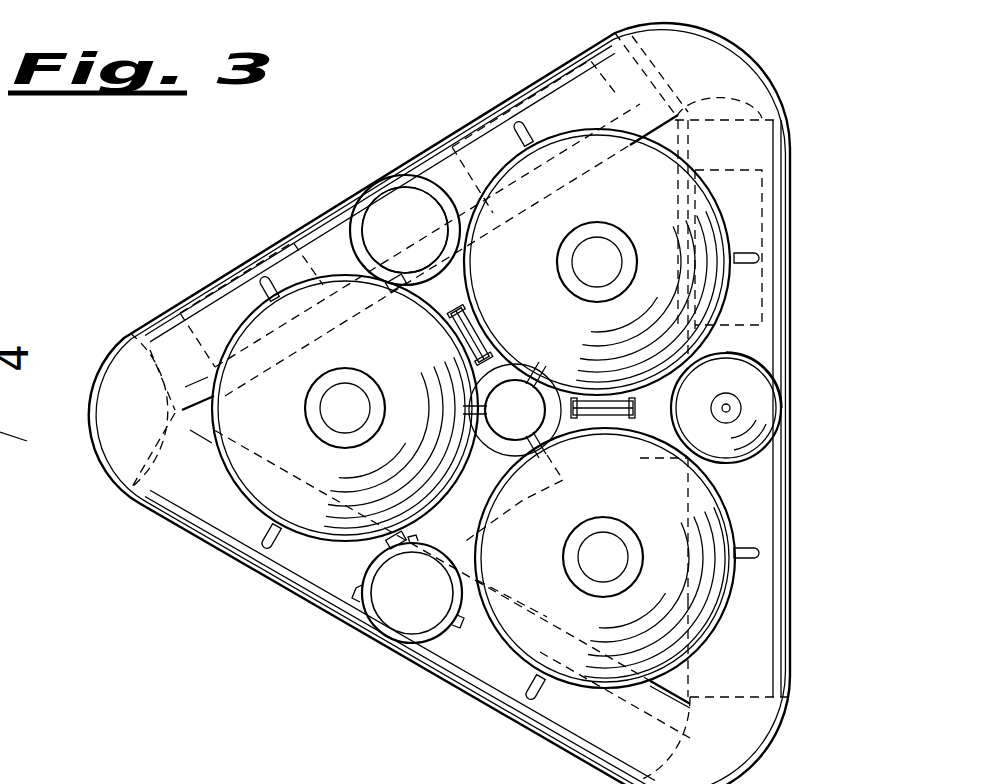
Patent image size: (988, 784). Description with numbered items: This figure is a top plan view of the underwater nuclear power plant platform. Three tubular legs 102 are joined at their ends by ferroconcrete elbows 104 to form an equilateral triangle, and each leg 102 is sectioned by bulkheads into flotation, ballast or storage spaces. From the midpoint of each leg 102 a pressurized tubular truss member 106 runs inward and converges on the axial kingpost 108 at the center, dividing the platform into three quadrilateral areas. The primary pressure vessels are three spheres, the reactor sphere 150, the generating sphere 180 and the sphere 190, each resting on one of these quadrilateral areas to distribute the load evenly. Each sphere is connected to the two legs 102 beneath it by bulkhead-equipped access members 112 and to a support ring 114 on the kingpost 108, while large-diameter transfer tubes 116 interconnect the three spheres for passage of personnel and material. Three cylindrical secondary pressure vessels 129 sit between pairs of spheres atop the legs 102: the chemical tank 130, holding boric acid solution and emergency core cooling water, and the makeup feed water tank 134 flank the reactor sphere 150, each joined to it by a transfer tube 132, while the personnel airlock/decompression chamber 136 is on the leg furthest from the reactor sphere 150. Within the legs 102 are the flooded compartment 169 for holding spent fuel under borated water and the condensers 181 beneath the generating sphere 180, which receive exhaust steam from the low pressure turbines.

The tubular leg 102 is at (224, 304).
The ferroconcrete elbow 104 is at (742, 90).
The tubular truss member 106 is at (435, 308).
The kingpost 108 is at (590, 400).
The access member 112 is at (530, 133).
The support ring 114 is at (512, 512).
The transfer tube 116 is at (458, 350).
The secondary pressure vessel 129 is at (352, 206).
The chemical tank 130 is at (381, 232).
The transfer tube 132 is at (388, 280).
The makeup feed water tank 134 is at (437, 628).
The personnel airlock/decompression chamber 136 is at (783, 420).
The reactor sphere 150 is at (331, 515).
The flooded compartment 169 is at (212, 282).
The generating sphere 180 is at (596, 152).
The condenser 181 is at (497, 110).
The sphere 190 is at (648, 655).